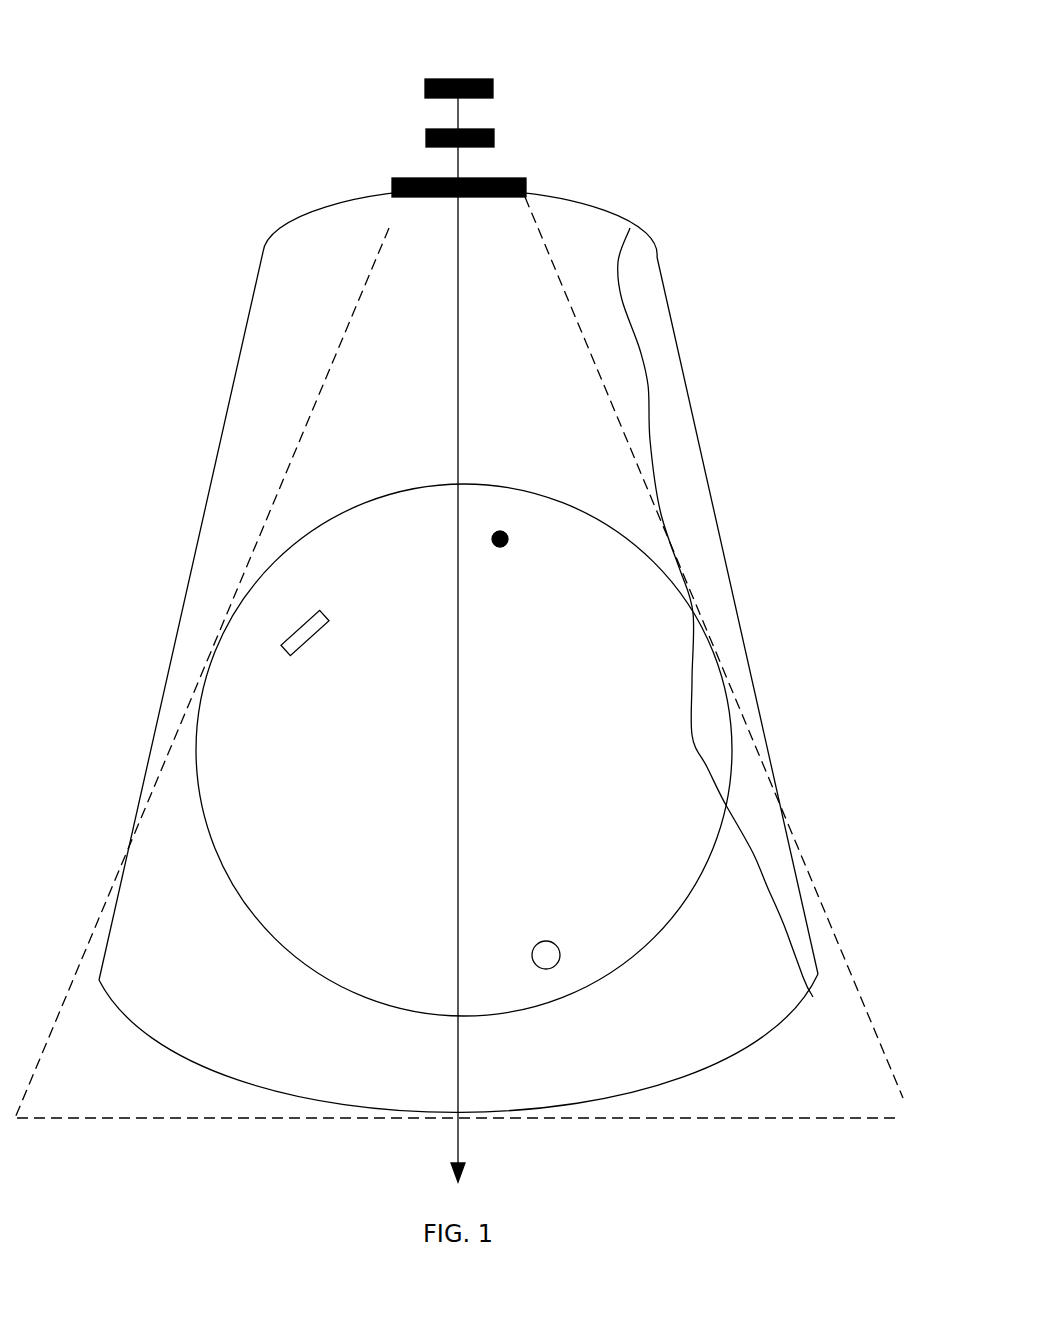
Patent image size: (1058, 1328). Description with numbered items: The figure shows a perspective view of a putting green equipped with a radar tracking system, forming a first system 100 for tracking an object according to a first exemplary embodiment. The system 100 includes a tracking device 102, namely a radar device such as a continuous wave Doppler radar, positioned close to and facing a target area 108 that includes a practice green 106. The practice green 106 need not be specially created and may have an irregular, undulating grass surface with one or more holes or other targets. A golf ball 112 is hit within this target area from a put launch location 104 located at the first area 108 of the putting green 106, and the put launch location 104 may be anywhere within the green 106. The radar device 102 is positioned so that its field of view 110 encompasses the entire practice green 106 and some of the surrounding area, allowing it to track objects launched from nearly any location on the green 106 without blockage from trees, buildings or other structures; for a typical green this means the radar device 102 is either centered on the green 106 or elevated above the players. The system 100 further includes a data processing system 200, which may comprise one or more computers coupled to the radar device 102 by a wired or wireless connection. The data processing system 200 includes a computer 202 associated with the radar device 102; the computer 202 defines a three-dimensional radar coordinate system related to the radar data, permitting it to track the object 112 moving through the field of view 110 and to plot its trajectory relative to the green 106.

The first system 100 is at (213, 137).
The tracking device 102 is at (527, 190).
The put launch location 104 is at (300, 623).
The practice green 106 is at (690, 887).
The first area 108 is at (258, 280).
The field of view 110 is at (602, 378).
The golf ball 112 is at (508, 540).
The data processing system 200 is at (494, 145).
The computer 202 is at (494, 90).